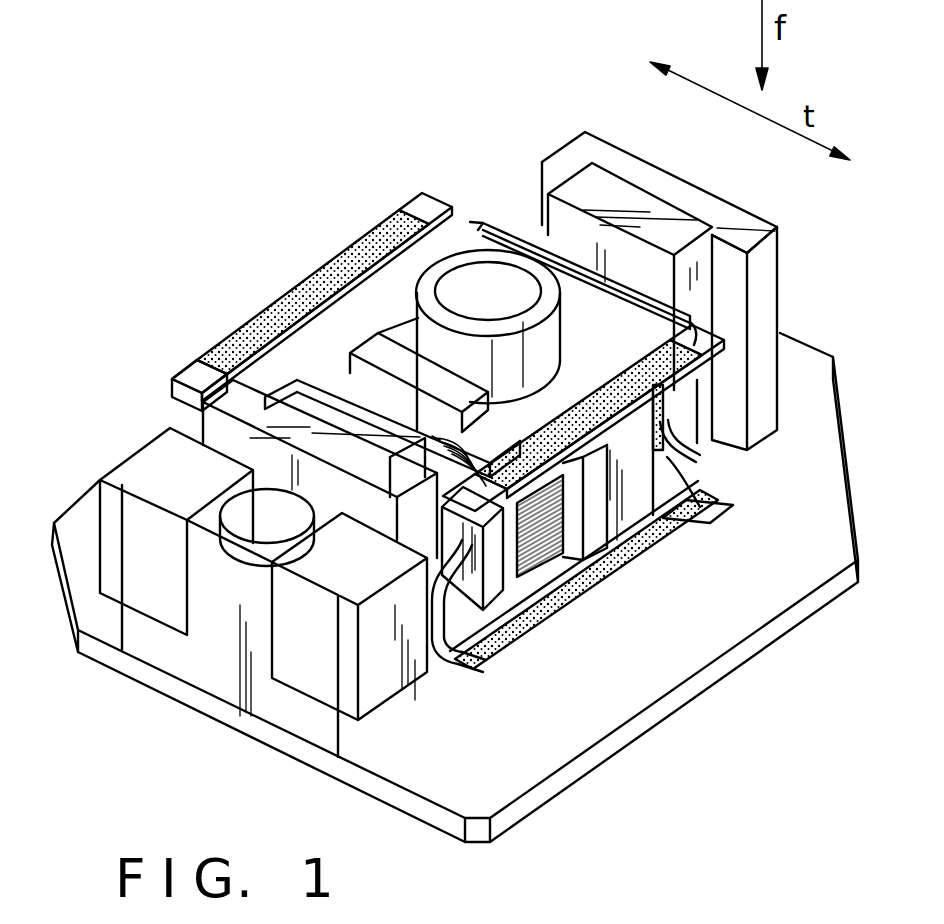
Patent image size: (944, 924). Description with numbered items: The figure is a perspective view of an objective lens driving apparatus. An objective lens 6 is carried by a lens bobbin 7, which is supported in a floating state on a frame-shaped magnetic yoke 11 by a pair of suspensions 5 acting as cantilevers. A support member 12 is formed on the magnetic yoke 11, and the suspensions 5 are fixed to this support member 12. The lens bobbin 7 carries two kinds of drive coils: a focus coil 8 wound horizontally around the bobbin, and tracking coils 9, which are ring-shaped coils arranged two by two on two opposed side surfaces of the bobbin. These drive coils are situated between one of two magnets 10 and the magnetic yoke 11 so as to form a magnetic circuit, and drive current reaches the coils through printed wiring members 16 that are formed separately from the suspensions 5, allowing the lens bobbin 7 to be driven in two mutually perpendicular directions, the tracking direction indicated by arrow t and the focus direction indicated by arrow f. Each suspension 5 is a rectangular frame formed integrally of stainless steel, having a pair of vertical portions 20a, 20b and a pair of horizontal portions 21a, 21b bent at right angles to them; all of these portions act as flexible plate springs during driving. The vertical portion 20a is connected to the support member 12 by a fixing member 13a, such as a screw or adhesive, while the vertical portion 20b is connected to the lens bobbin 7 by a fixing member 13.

The suspension 5 is at (398, 207).
The objective lens 6 is at (466, 278).
The lens bobbin 7 is at (665, 345).
The focus coil 8 is at (543, 557).
The tracking coil 9 is at (500, 447).
The magnet 10 is at (611, 185).
The magnetic yoke 11 is at (455, 505).
The support member 12 is at (205, 684).
The coil bobbin flange 13 is at (663, 530).
The fixing member 13a is at (132, 463).
The printed wiring member 16 is at (442, 527).
The vertical portion 20a is at (438, 645).
The vertical portion 20b is at (693, 458).
The horizontal portion 21a is at (308, 286).
The horizontal portion 21b is at (640, 570).